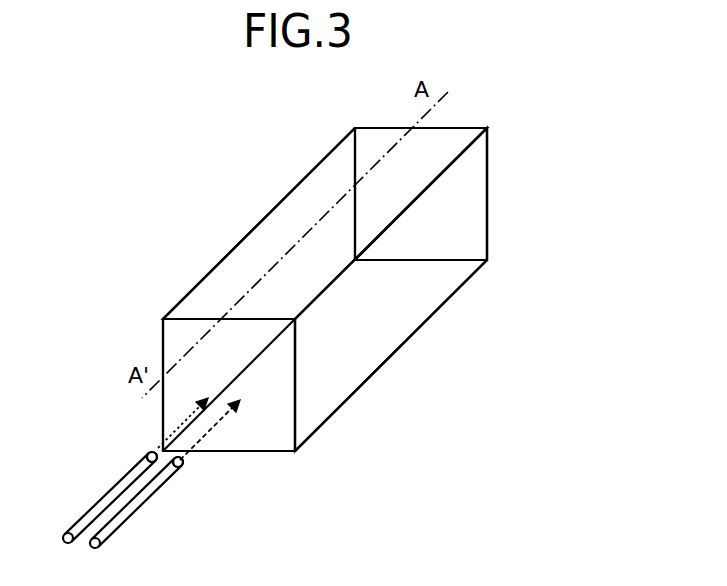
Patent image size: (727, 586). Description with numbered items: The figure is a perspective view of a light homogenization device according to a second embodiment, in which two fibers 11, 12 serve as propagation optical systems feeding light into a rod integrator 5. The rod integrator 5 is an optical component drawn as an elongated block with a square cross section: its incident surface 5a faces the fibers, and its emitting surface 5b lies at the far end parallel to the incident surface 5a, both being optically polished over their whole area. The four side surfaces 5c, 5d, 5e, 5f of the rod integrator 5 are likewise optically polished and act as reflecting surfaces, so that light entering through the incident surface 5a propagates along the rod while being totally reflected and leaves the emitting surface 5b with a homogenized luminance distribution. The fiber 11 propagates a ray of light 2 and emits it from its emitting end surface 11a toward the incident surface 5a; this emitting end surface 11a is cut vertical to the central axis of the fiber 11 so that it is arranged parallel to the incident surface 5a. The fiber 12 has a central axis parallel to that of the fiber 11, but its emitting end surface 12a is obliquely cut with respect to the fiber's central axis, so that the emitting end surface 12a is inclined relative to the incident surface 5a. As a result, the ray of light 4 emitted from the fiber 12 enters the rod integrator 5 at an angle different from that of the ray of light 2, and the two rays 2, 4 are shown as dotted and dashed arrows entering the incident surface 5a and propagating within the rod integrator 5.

The ray of light 2 is at (175, 427).
The ray of light 4 is at (212, 427).
The rod integrator 5 is at (483, 273).
The incident surface 5a is at (273, 433).
The emitting surface 5b is at (465, 207).
The side surface 5c is at (415, 298).
The side surface 5d is at (310, 197).
The side surface 5e is at (240, 265).
The side surface 5f is at (352, 363).
The fiber 11 is at (88, 510).
The emitting end surface 11a is at (147, 448).
The fiber 12 is at (138, 510).
The emitting end surface 12a is at (183, 466).